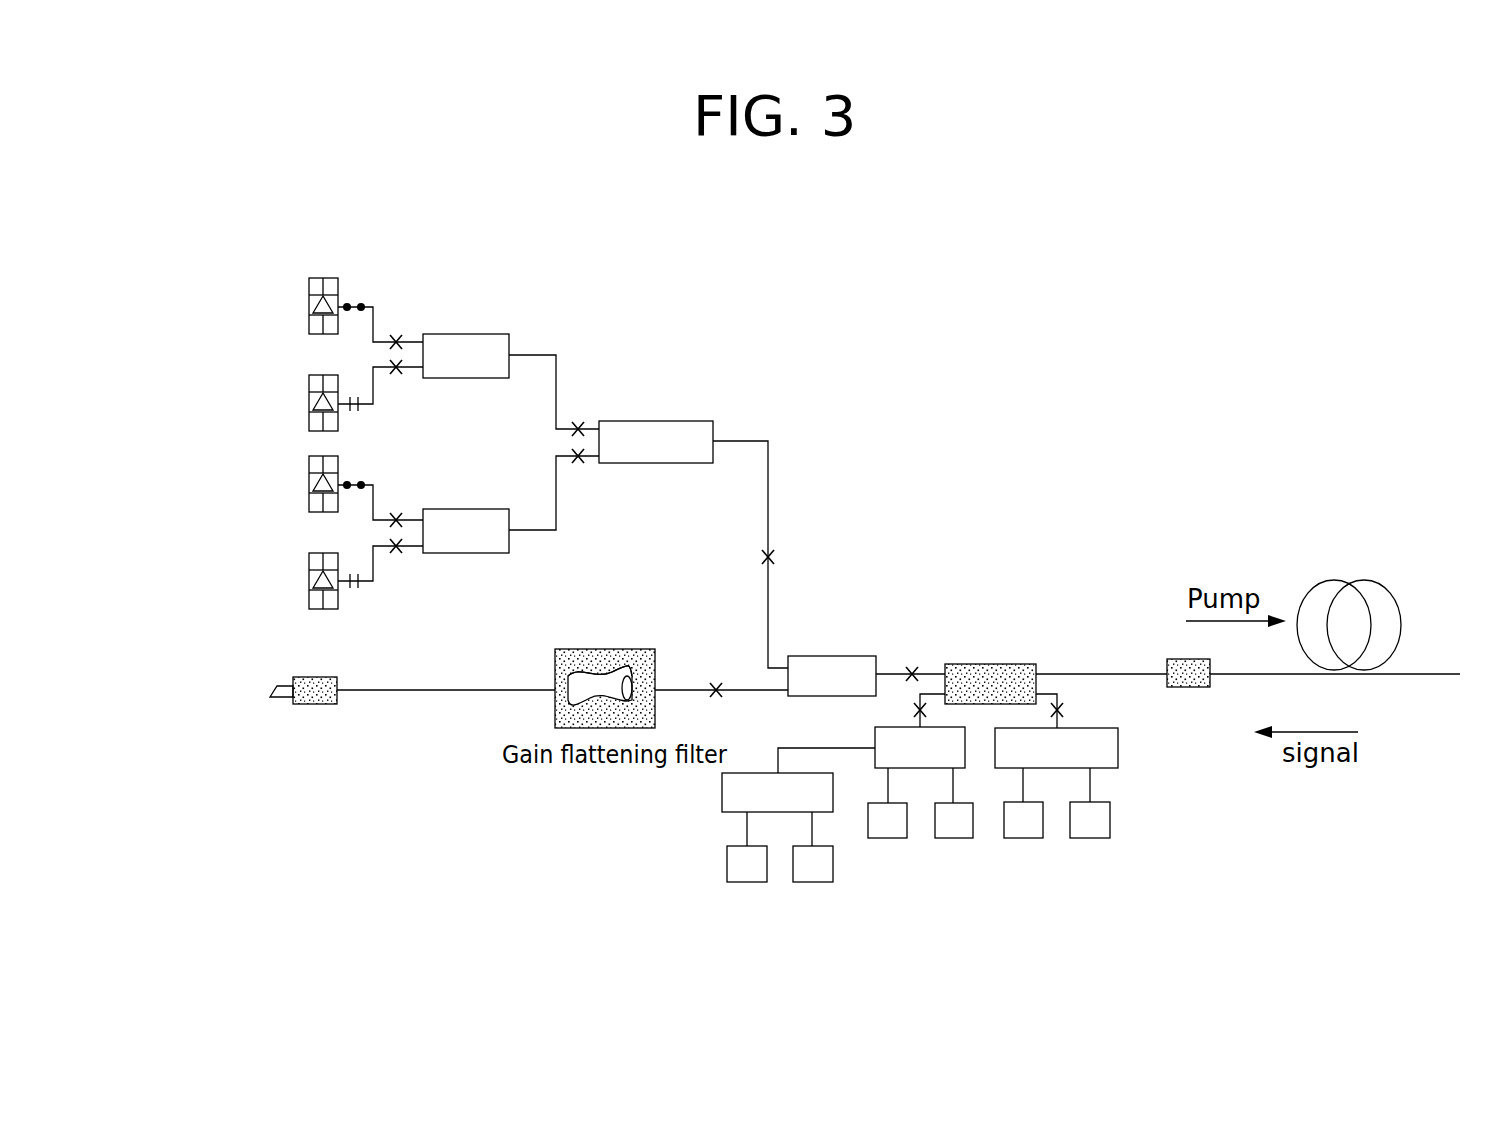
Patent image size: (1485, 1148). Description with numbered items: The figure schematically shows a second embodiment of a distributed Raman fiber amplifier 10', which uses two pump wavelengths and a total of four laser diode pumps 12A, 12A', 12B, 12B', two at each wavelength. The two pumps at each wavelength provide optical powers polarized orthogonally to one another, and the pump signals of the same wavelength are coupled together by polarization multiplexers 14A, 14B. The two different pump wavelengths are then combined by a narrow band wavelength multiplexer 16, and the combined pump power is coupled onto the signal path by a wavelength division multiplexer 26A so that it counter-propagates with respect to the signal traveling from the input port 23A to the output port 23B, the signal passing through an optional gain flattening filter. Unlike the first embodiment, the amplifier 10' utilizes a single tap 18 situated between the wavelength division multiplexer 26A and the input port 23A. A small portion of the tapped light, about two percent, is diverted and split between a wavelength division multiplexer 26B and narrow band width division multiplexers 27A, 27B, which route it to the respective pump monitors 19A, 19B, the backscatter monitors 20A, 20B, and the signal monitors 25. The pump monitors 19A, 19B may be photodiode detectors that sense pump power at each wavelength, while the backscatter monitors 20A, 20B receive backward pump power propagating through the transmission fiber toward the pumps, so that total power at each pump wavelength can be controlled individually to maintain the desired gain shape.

The distributed Raman fiber amplifier 10' is at (1151, 294).
The laser diode pump 12A is at (295, 313).
The laser diode pump 12A' is at (293, 395).
The laser diode pump 12B is at (295, 491).
The laser diode pump 12B' is at (293, 574).
The polarization multiplexer 14A is at (453, 378).
The polarization multiplexer 14B is at (470, 509).
The narrow band wavelength multiplexer 16 is at (640, 421).
The tap 18 is at (1015, 664).
The pump monitor 19A is at (1020, 838).
The pump monitor 19B is at (1090, 838).
The back scatter monitor 20A is at (747, 882).
The back scatter monitor 20B is at (812, 882).
The input port 23A is at (1188, 687).
The output port 23B is at (316, 677).
The signal monitor 25 is at (887, 838).
The wavelength division multiplexer 26A is at (833, 656).
The wavelength division multiplexer 26B is at (875, 736).
The narrow band width division multiplexer 27A is at (1118, 748).
The narrow band width division multiplexer 27B is at (757, 773).